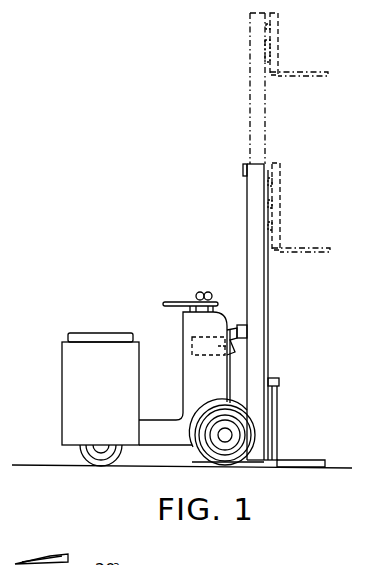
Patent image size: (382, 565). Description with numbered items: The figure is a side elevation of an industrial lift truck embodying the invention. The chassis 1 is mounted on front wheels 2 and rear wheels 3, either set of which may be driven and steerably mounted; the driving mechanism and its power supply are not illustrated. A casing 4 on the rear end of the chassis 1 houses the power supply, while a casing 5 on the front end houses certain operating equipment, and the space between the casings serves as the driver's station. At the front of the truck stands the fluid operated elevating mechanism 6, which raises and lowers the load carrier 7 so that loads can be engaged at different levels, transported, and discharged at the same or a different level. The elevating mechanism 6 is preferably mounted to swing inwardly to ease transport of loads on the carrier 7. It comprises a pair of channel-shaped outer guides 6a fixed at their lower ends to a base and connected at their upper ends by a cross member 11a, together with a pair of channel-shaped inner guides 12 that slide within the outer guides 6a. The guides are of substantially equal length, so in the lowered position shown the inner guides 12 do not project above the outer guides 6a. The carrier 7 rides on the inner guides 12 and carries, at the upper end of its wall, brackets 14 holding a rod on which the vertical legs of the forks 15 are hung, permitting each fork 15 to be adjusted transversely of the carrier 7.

The chassis 1 is at (164, 436).
The front wheels 2 is at (208, 462).
The rear wheels 3 is at (80, 452).
The casing 4 is at (102, 379).
The casing 5 is at (190, 376).
The fluid operated elevating mechanism 6 is at (289, 324).
The outer guides 6a is at (250, 242).
The load carrier 7 is at (294, 440).
The cross member 11a is at (243, 170).
The inner guides 12 is at (250, 100).
The brackets 14 is at (273, 380).
The forks 15 is at (307, 462).